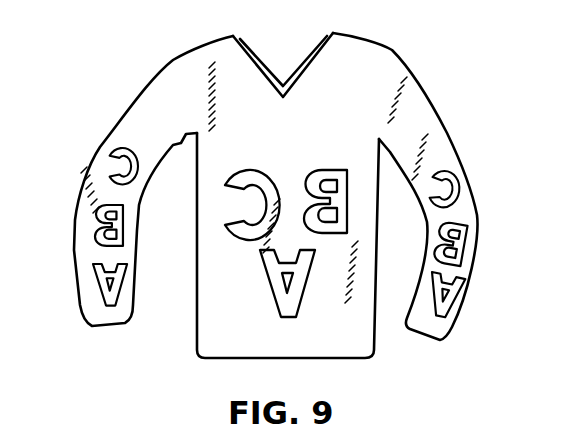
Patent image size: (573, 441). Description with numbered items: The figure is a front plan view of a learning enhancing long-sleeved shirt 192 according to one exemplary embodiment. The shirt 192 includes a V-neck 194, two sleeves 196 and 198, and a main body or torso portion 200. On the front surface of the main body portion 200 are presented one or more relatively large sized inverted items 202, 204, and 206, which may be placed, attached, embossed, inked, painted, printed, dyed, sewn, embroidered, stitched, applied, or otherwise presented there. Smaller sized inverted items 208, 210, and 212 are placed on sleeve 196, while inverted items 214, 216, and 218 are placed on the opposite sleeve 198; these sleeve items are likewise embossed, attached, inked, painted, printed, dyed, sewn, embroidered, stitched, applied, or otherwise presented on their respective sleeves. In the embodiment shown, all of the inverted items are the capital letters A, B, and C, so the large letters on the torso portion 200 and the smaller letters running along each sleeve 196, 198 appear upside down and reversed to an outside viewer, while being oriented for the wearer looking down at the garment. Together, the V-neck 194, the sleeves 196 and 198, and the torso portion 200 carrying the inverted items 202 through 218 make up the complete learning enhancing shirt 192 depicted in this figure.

The long-sleeved shirt 192 is at (433, 70).
The V-neck 194 is at (315, 46).
The sleeve 196 is at (447, 121).
The sleeve 198 is at (118, 114).
The main body or torso portion 200 is at (347, 333).
The inverted item 202 is at (268, 287).
The inverted item 204 is at (340, 168).
The inverted item 206 is at (265, 163).
The inverted item 208 is at (455, 300).
The inverted item 210 is at (465, 243).
The inverted item 212 is at (452, 175).
The inverted item 214 is at (97, 267).
The inverted item 216 is at (96, 222).
The inverted item 218 is at (114, 164).